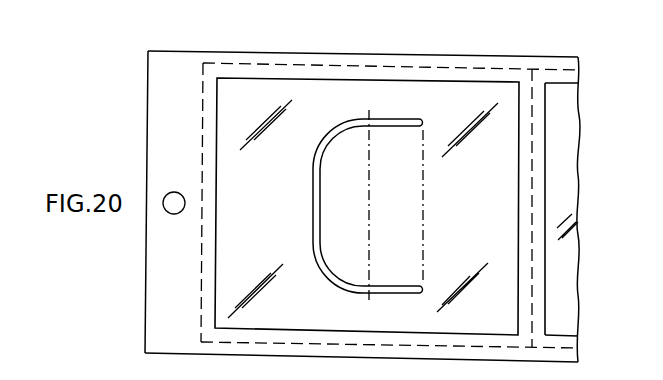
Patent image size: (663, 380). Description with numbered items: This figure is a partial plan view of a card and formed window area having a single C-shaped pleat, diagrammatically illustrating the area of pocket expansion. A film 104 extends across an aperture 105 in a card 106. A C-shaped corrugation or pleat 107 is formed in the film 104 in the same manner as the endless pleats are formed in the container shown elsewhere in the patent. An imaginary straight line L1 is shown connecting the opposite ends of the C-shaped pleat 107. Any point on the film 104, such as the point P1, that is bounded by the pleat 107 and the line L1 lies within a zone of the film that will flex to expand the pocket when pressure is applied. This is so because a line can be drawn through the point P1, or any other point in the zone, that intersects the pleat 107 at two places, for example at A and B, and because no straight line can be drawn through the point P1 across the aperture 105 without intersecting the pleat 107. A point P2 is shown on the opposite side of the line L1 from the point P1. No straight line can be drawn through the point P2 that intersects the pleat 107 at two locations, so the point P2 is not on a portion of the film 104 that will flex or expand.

The film 104 is at (458, 97).
The aperture 105 is at (342, 78).
The card 106 is at (157, 103).
The C-shaped pleat 107 is at (312, 195).
The intersection point A is at (370, 125).
The intersection point B is at (368, 288).
The point P1 is at (367, 207).
The imaginary straight line L1 is at (423, 207).
The point P2 is at (455, 168).